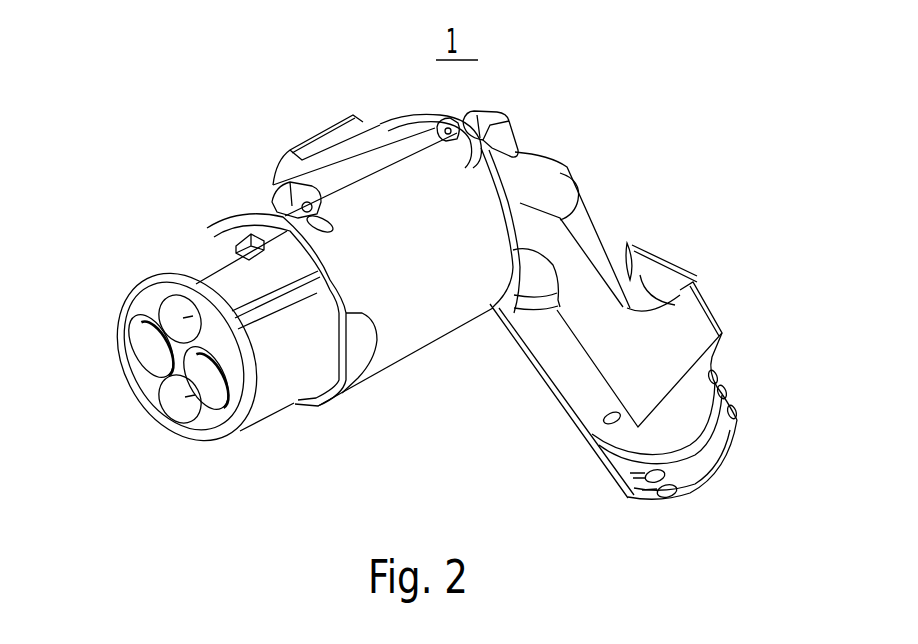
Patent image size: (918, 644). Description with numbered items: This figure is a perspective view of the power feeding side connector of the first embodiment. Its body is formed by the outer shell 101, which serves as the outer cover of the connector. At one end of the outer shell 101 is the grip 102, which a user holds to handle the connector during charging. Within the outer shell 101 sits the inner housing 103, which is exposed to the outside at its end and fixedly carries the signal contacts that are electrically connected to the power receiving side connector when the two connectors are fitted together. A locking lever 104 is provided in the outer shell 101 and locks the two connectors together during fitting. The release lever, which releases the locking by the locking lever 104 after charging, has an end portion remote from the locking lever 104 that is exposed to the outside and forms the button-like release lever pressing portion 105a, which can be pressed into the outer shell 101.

The outer shell 101 is at (407, 177).
The grip 102 is at (582, 280).
The inner housing 103 is at (147, 303).
The locking lever 104 is at (263, 240).
The release lever pressing portion 105a is at (487, 121).